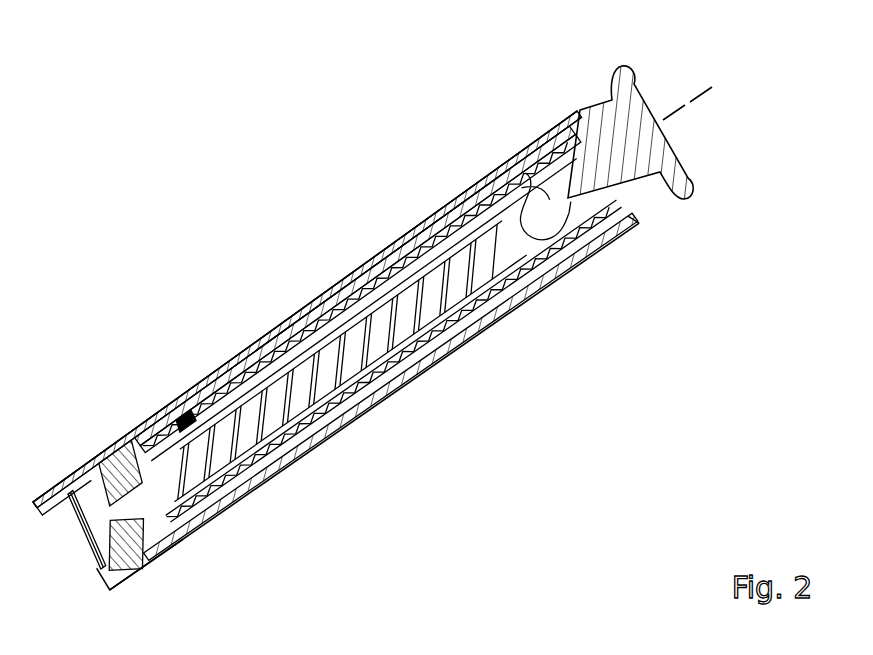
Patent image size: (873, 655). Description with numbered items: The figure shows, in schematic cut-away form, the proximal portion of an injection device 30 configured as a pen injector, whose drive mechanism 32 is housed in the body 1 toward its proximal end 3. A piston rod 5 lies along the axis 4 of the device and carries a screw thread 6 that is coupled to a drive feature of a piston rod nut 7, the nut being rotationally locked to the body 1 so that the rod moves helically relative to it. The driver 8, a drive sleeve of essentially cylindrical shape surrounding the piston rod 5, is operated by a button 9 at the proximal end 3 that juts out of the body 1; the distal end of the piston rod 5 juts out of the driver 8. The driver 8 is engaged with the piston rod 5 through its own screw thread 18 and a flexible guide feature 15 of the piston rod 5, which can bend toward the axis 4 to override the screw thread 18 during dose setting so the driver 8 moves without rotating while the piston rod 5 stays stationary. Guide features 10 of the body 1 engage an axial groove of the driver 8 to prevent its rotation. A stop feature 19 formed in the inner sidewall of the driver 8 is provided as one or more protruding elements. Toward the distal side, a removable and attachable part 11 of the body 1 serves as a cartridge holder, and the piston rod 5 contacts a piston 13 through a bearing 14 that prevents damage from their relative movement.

The body 1 is at (232, 358).
The proximal end 3 is at (628, 246).
The axis 4 is at (693, 102).
The piston rod 5 is at (300, 377).
The screw thread 6 is at (335, 340).
The piston rod nut 7 is at (116, 473).
The driver 8 is at (453, 227).
The button 9 is at (612, 108).
The guide features 10 is at (366, 272).
The removable and attachable part 11 is at (57, 483).
The piston 13 is at (76, 520).
The bearing 14 is at (104, 570).
The flexible guide feature 15 is at (586, 198).
The screw thread 18 is at (293, 443).
The stop feature 19 is at (190, 425).
The injection device 30 is at (297, 185).
The drive mechanism 32 is at (415, 158).